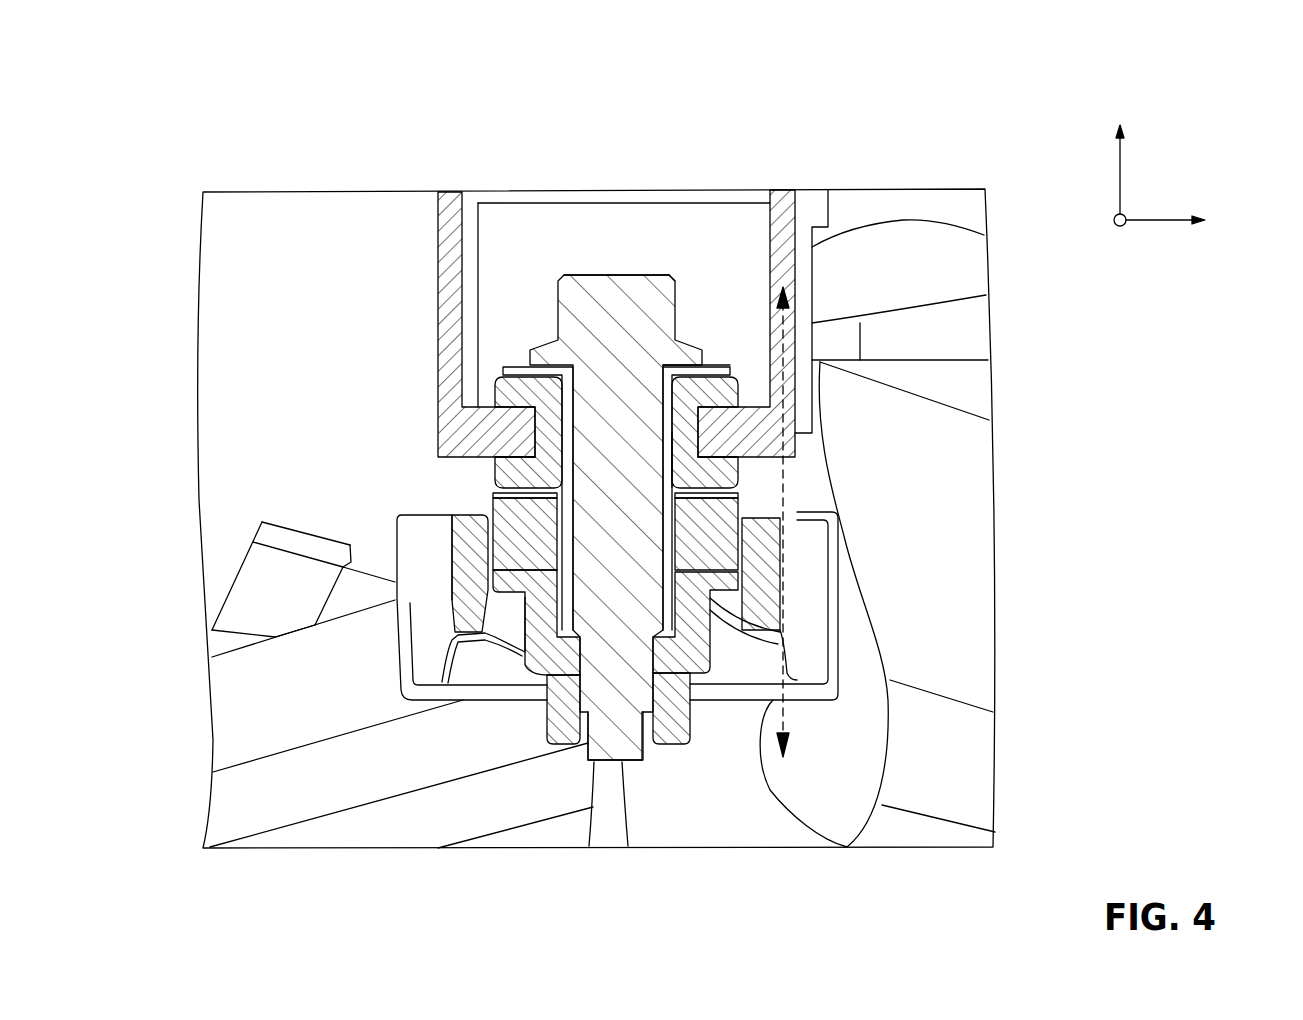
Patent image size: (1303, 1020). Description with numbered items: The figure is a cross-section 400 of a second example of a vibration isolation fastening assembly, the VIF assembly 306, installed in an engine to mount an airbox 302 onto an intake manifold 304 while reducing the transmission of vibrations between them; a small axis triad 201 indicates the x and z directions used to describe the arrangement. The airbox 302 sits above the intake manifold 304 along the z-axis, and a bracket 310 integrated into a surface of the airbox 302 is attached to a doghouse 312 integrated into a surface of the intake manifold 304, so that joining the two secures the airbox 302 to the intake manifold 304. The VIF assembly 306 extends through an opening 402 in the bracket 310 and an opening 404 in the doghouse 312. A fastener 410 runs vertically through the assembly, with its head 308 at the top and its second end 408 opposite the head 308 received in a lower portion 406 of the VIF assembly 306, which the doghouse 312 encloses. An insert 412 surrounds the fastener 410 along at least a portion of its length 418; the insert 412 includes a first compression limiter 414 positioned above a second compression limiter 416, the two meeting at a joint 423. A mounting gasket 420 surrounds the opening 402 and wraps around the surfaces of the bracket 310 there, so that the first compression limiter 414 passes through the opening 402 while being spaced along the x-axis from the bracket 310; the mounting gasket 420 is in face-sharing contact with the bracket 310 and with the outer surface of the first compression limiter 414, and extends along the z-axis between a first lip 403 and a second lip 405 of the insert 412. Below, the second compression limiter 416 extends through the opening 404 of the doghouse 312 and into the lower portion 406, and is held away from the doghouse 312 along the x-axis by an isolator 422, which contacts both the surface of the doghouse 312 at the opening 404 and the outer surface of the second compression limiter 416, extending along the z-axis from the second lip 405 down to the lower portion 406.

The coordinate system 201 is at (1210, 93).
The airbox 302 is at (903, 240).
The intake manifold 304 is at (718, 827).
The VIF assembly 306 is at (596, 226).
The head 308 is at (612, 275).
The bracket 310 is at (484, 258).
The doghouse 312 is at (467, 562).
The cross-section 400 is at (199, 123).
The opening 402 is at (603, 346).
The first lip 403 is at (685, 370).
The opening 404 is at (495, 528).
The second lip 405 is at (528, 495).
The lower portion 406 is at (552, 718).
The second end 408 is at (633, 750).
The fastener 410 is at (657, 272).
The insert 412 is at (722, 347).
The first compression limiter 414 is at (507, 372).
The second compression limiter 416 is at (672, 523).
The length 418 is at (785, 708).
The mounting gasket 420 is at (517, 398).
The isolator 422 is at (693, 557).
The joint 423 is at (670, 462).